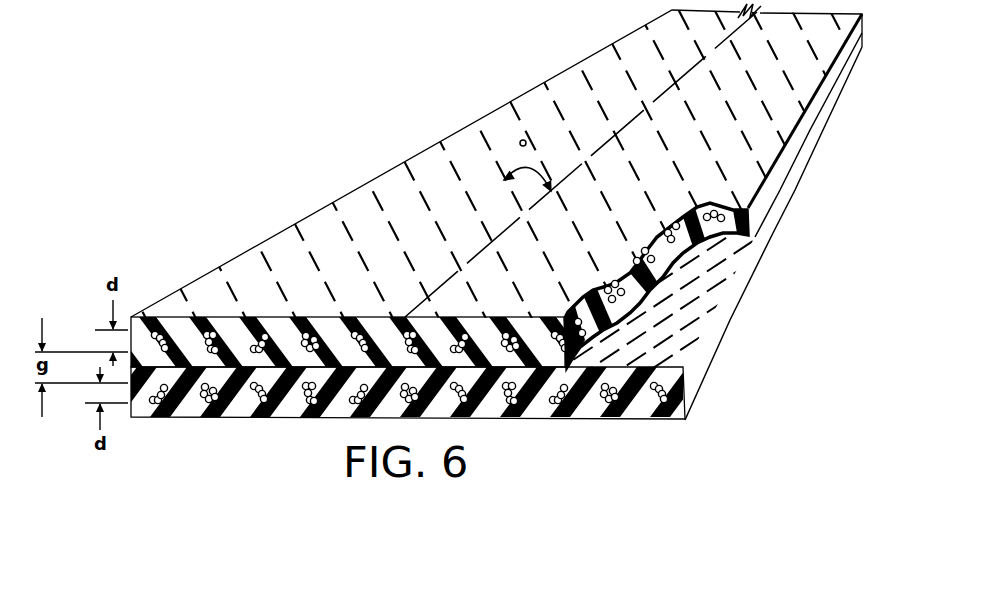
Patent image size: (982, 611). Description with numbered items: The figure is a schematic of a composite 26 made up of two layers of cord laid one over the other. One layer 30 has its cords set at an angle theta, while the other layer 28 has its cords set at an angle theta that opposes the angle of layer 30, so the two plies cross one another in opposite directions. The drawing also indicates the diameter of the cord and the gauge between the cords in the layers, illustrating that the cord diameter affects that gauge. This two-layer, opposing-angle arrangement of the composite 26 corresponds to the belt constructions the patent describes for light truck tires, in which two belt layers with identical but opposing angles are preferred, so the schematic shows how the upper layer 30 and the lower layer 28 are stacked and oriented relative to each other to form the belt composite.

The composite 26 is at (491, 248).
The layer 28 is at (762, 233).
The layer 30 is at (773, 185).